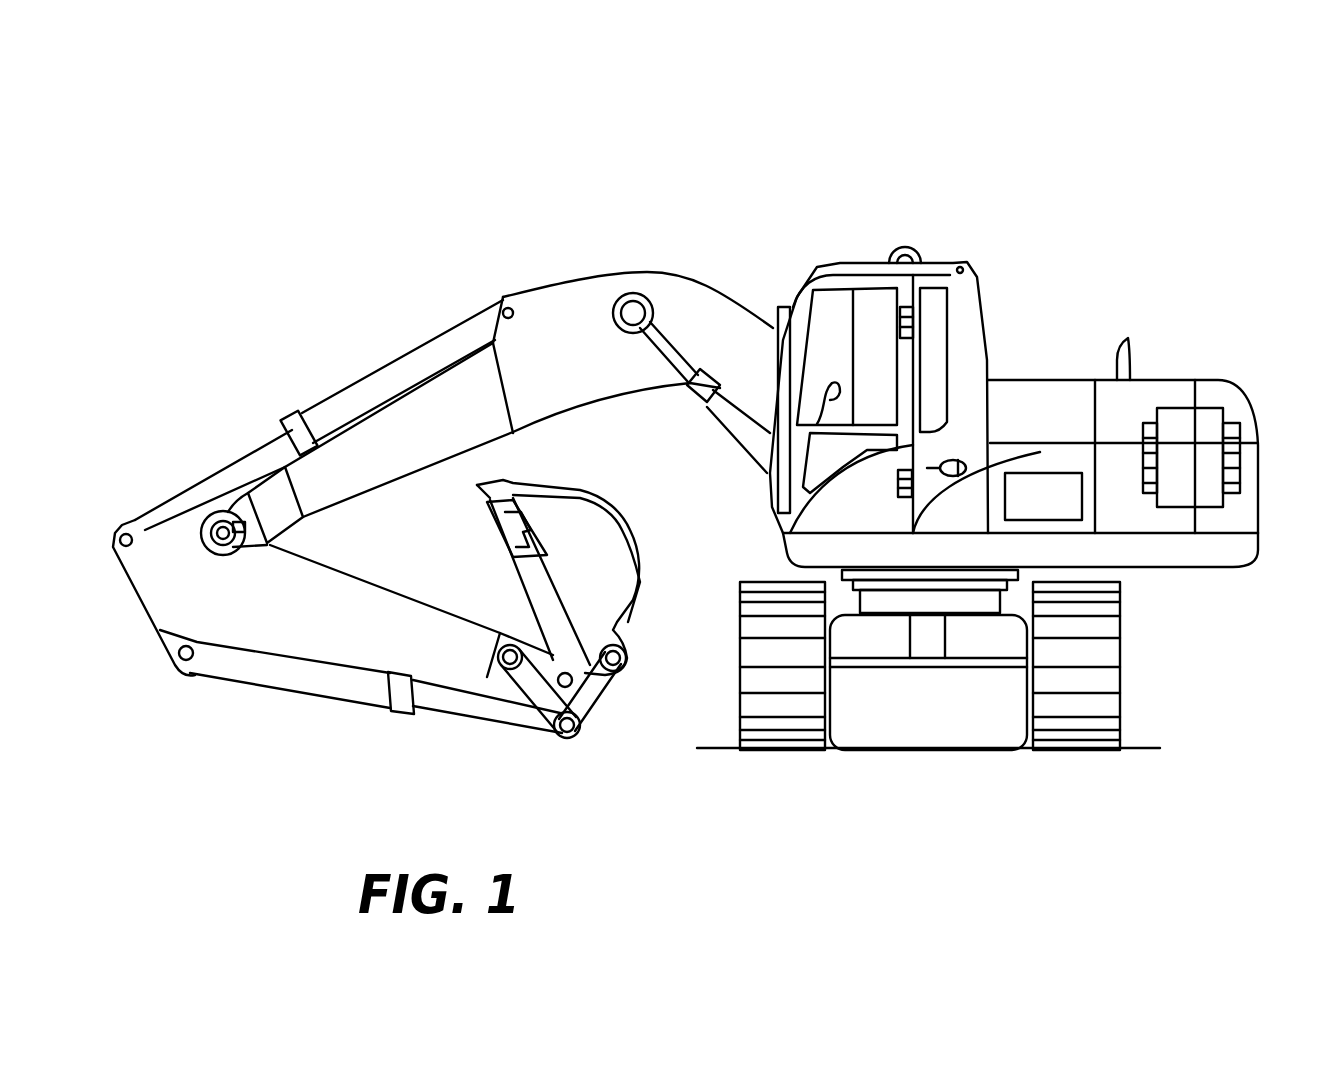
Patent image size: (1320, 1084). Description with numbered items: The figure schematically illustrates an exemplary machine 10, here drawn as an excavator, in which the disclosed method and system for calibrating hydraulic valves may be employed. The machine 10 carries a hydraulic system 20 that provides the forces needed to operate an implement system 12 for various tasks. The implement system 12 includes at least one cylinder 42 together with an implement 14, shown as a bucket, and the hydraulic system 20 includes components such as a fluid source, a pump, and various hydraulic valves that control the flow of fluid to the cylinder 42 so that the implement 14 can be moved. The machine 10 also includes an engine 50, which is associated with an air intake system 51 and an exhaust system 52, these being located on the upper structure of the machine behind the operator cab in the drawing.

The machine 10 is at (1160, 166).
The implement system 12 is at (758, 240).
The implement 14 is at (617, 581).
The hydraulic system 20 is at (1035, 473).
The cylinder 42 is at (270, 675).
The engine 50 is at (1178, 497).
The air intake system 51 is at (1245, 478).
The exhaust system 52 is at (1143, 430).